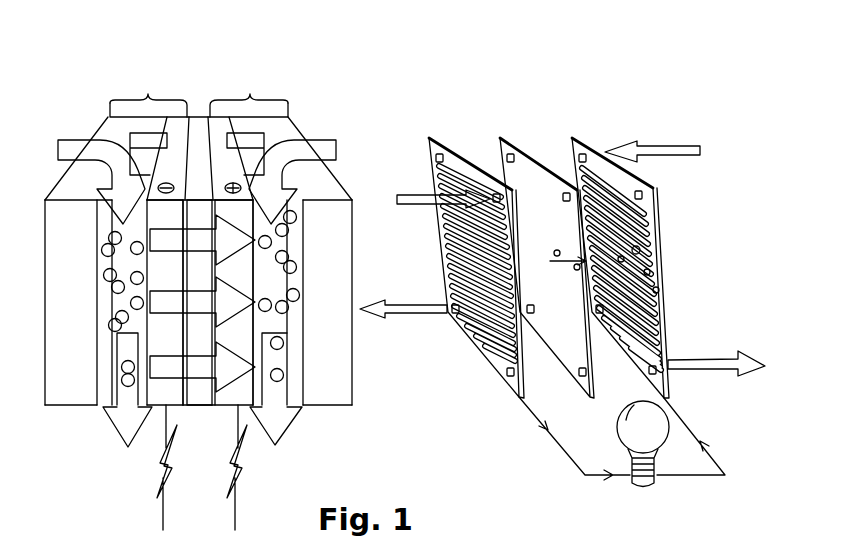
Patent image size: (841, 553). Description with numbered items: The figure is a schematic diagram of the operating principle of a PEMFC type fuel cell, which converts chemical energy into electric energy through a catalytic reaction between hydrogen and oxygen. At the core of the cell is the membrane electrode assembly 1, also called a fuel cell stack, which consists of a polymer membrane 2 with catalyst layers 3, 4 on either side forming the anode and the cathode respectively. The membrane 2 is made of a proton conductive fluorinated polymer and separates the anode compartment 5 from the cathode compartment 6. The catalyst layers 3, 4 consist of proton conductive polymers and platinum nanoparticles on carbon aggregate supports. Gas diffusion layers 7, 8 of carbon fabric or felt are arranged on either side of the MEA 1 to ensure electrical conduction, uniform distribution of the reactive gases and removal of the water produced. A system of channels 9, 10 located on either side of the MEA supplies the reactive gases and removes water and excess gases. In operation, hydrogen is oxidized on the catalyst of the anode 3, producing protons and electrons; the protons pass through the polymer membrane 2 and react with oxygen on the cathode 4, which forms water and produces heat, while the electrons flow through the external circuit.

The membrane electrode assembly 1 is at (230, 50).
The polymer membrane 2 is at (198, 135).
The anode catalyst layer 3 is at (188, 117).
The cathode catalyst layer 4 is at (208, 117).
The anode compartment 5 is at (148, 95).
The cathode compartment 6 is at (249, 95).
The gas diffusion layer 7 is at (160, 267).
The gas diffusion layer 8 is at (247, 280).
The channel system 9 is at (110, 380).
The channel system 10 is at (292, 382).